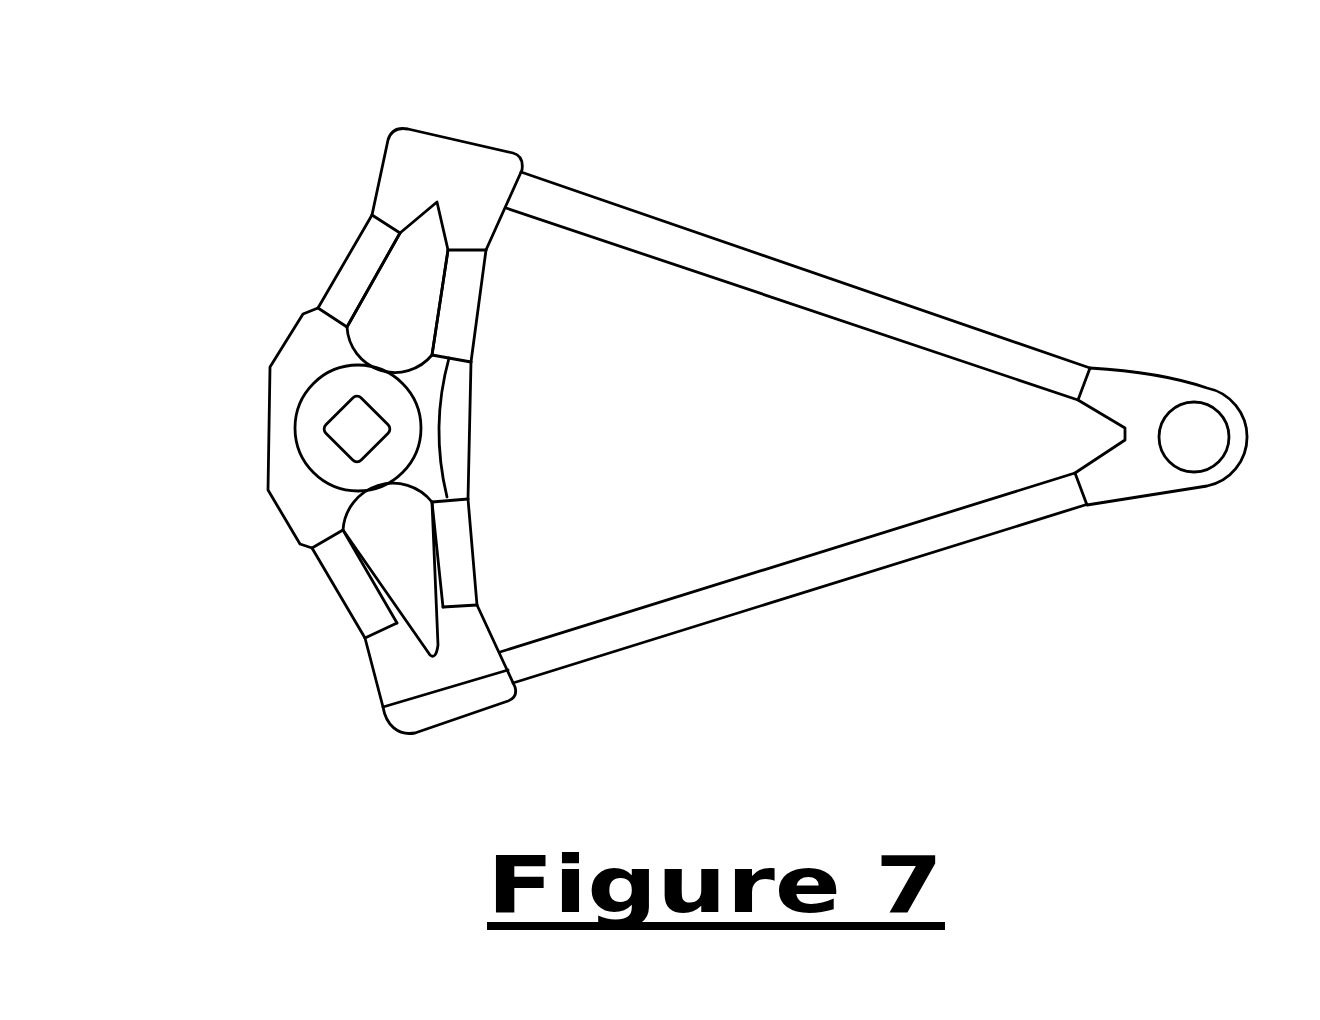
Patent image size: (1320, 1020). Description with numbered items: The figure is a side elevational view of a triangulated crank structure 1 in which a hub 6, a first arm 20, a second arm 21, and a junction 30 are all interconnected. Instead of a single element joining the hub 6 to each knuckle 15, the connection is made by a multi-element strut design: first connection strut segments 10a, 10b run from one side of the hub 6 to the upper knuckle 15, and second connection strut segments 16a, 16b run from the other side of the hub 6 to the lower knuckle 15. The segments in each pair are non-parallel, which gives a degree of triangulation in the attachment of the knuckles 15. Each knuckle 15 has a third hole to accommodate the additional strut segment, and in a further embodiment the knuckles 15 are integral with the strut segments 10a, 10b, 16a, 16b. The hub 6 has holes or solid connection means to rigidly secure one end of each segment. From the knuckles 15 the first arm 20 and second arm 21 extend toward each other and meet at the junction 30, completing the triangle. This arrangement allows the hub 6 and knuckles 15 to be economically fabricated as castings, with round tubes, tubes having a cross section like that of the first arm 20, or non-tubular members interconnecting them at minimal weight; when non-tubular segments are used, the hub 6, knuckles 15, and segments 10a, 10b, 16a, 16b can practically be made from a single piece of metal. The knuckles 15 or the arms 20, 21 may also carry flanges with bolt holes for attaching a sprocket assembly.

The crank structure 1 is at (923, 130).
The hub 6 is at (263, 478).
The first connection strut segment 10a is at (337, 267).
The first connection strut segment 10b is at (477, 312).
The knuckle 15 is at (485, 142).
The second connection strut segment 16a is at (337, 598).
The second connection strut segment 16b is at (473, 548).
The first arm 20 is at (943, 355).
The second arm 21 is at (753, 570).
The junction 30 is at (1222, 390).